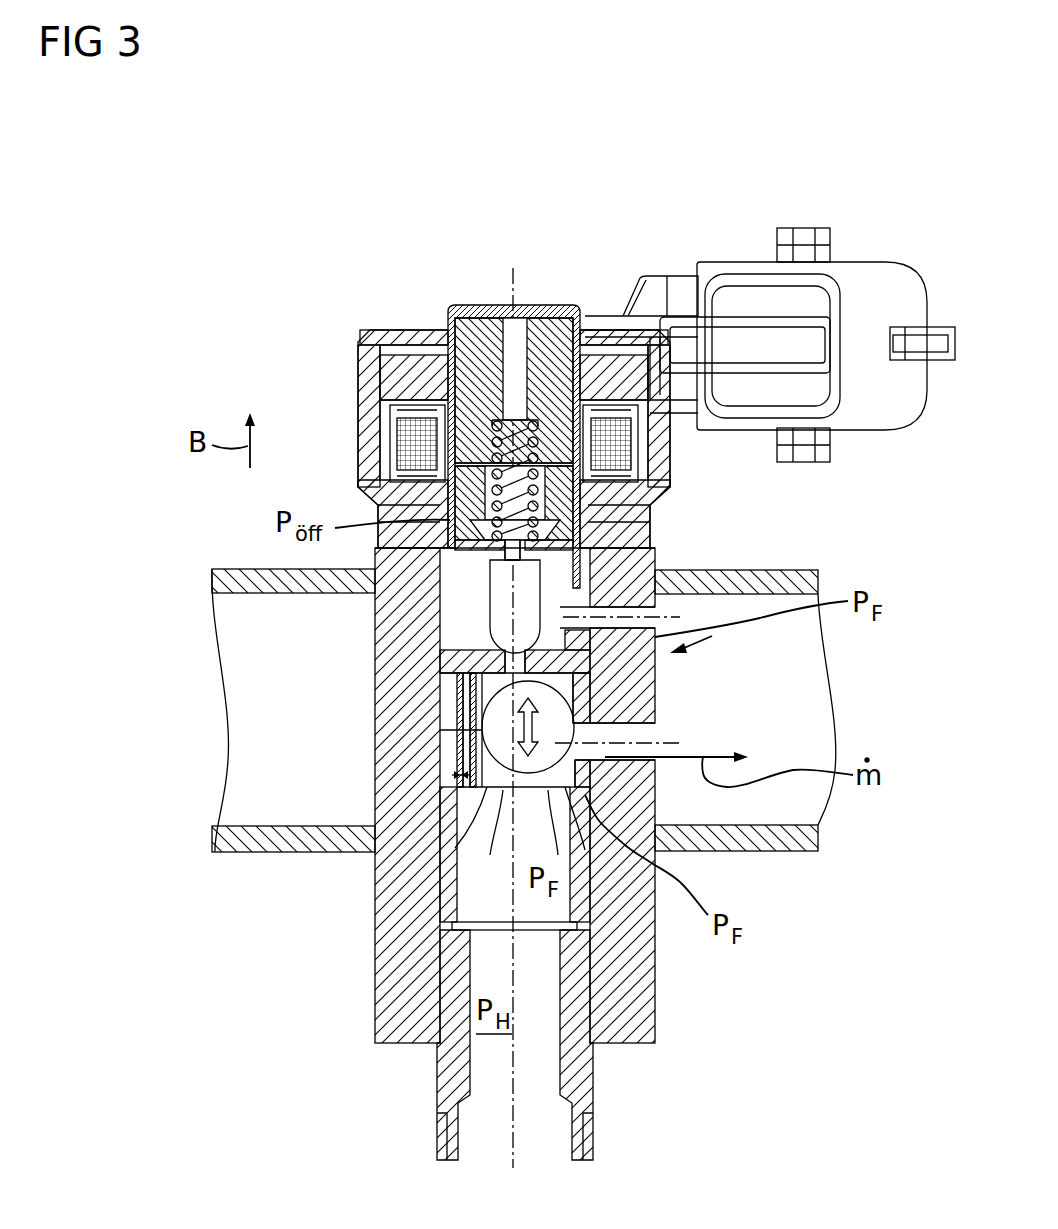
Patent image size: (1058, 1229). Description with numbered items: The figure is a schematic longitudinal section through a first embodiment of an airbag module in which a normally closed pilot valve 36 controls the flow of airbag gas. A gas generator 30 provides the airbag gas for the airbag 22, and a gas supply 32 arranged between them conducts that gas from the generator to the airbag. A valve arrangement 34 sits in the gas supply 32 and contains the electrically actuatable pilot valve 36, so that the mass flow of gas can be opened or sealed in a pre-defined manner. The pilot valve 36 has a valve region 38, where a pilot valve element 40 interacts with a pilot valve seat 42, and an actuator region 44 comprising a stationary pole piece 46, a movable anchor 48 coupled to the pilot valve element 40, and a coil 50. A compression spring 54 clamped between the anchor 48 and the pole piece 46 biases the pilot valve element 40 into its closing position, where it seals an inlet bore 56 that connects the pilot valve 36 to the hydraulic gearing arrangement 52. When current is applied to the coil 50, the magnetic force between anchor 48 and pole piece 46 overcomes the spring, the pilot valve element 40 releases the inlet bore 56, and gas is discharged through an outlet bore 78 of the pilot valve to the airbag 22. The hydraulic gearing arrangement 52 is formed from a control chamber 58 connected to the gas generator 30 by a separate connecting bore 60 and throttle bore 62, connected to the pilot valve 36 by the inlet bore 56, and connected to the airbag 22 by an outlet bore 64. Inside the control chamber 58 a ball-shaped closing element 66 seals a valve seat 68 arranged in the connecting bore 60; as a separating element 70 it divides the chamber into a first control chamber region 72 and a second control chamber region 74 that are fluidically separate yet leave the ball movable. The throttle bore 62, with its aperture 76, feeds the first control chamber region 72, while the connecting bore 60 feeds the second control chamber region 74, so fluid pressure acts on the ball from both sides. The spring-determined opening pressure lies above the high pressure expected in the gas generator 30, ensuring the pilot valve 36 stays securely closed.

The airbag 22 is at (777, 667).
The gas generator 30 is at (497, 1073).
The gas supply 32 is at (592, 792).
The valve arrangement 34 is at (725, 548).
The pilot valve 36 is at (574, 204).
The valve region 38 is at (560, 600).
The pilot valve element 40 is at (503, 653).
The pilot valve seat 42 is at (500, 645).
The actuator region 44 is at (325, 350).
The pole piece 46 is at (470, 340).
The anchor 48 is at (465, 496).
The coil 50 is at (618, 438).
The hydraulic gearing arrangement 52 is at (600, 640).
The compression spring 54 is at (455, 430).
The inlet bore 56 is at (490, 688).
The control chamber 58 is at (563, 686).
The connecting bore 60 is at (578, 800).
The throttle bore 62 is at (500, 750).
The outlet bore 64 is at (633, 733).
The closing element 66 is at (460, 782).
The valve seat 68 is at (485, 795).
The separating element 70 is at (478, 722).
The first control chamber region 72 is at (500, 713).
The second control chamber region 74 is at (470, 795).
The aperture 76 is at (458, 790).
The outlet bore 78 is at (640, 612).